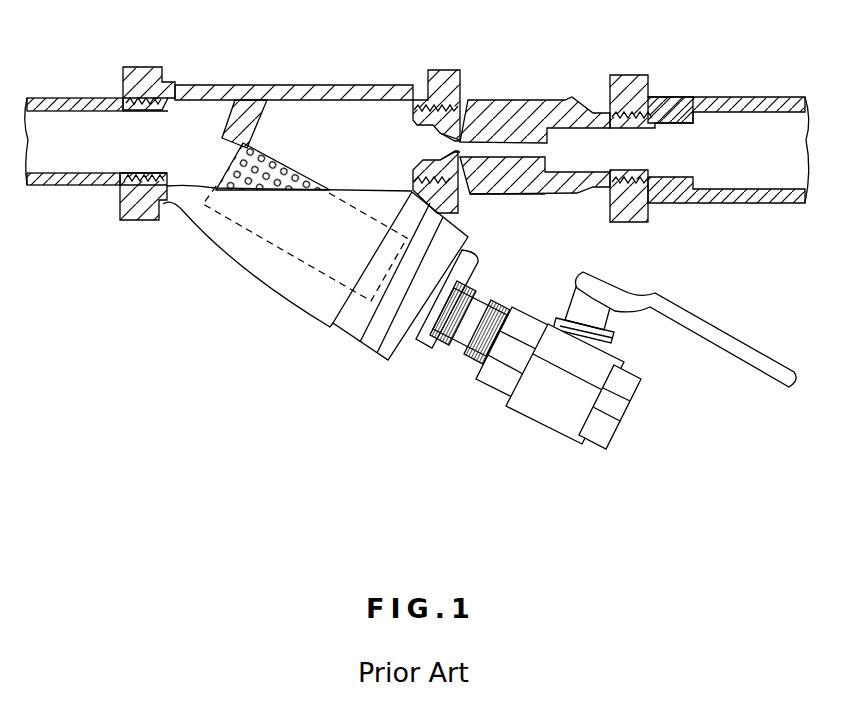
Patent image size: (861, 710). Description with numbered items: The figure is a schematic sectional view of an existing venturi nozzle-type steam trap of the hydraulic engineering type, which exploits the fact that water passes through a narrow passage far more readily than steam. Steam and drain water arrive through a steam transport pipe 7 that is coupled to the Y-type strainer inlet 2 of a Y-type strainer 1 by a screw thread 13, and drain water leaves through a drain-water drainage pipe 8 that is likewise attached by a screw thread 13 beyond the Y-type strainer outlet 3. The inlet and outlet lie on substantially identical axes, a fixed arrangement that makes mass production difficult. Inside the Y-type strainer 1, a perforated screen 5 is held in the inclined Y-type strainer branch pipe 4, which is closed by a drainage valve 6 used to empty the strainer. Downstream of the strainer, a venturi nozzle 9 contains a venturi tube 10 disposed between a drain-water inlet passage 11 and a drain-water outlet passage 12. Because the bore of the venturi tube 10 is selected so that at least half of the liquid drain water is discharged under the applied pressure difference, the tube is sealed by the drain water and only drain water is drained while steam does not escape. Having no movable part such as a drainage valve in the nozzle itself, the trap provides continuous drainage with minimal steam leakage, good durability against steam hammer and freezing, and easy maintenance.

The Y-type strainer 1 is at (251, 83).
The Y-type strainer inlet 2 is at (146, 64).
The Y-type strainer outlet 3 is at (443, 66).
The Y-type strainer branch pipe 4 is at (272, 298).
The screen 5 is at (240, 180).
The drainage valve 6 is at (491, 390).
The steam transport pipe 7 is at (53, 97).
The drain-water drainage pipe 8 is at (696, 96).
The venturi nozzle 9 is at (520, 98).
The venturi tube 10 is at (458, 139).
The drain-water inlet passage 11 is at (447, 152).
The drain-water outlet passage 12 is at (494, 160).
The screw thread 13 is at (438, 106).